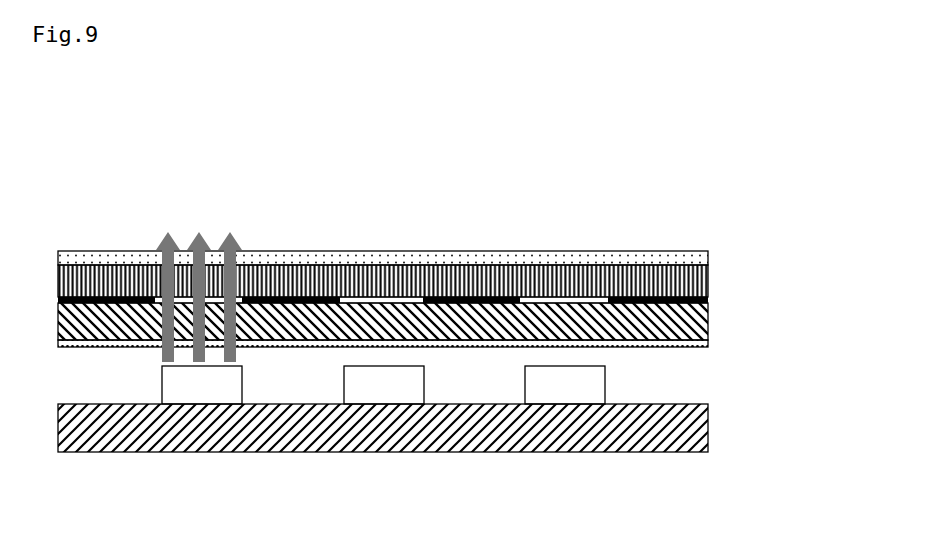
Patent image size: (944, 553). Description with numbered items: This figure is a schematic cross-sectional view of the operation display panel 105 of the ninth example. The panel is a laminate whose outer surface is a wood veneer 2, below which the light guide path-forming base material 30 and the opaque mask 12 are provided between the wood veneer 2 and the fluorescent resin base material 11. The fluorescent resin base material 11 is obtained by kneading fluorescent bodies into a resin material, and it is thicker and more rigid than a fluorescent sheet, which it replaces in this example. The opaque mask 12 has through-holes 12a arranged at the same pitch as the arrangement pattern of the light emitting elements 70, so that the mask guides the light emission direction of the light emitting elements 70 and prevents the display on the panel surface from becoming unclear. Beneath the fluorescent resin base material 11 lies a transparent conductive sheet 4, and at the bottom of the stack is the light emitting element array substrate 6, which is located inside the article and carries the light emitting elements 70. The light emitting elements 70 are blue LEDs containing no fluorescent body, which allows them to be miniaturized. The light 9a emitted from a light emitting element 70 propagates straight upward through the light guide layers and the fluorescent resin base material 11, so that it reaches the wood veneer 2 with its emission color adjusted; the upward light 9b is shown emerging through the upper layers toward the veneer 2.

The operation display panel 105 is at (445, 231).
The wood veneer 2 is at (710, 253).
The light guide path-forming base material 30 is at (712, 278).
The opaque mask 12 is at (712, 300).
The through-holes 12a is at (398, 264).
The fluorescent resin base material 11 is at (712, 321).
The transparent conductive sheet 4 is at (712, 344).
The light emitting element 70 is at (605, 378).
The light emitting element array substrate 6 is at (708, 429).
The light emitted upward 9b is at (201, 232).
The light 9a is at (200, 363).